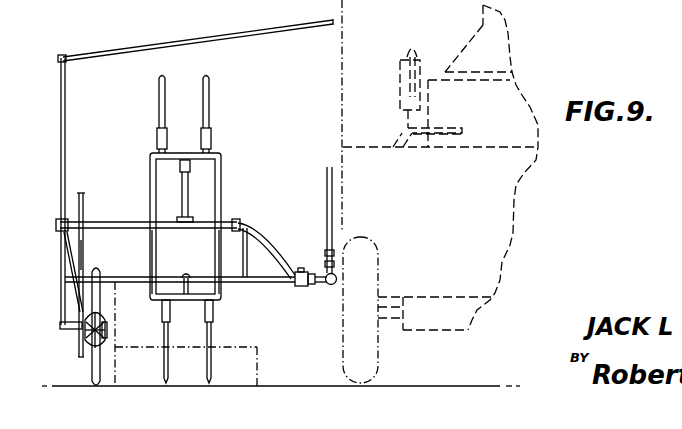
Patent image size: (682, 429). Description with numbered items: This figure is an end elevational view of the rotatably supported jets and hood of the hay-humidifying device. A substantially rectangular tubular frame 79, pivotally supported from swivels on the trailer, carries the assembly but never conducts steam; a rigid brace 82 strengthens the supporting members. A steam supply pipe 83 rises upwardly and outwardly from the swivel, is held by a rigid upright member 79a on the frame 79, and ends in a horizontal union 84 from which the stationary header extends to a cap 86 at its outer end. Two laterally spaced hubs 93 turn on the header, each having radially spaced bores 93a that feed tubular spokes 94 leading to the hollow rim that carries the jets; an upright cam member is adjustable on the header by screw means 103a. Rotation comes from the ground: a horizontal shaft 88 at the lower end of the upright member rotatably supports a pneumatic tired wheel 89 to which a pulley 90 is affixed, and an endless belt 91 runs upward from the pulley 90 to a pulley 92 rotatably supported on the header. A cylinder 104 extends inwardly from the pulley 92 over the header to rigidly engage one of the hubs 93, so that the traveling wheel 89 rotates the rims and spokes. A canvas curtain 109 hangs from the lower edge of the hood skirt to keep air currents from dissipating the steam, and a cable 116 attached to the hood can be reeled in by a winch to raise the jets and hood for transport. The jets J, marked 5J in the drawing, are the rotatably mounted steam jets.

The cable 116 is at (160, 43).
The piston rod 5J is at (209, 115).
The tubular spoke 94 is at (149, 171).
The pulley 92 is at (84, 200).
The radially spaced bores 93a is at (148, 212).
The hubs 93 is at (176, 199).
The union 84 is at (238, 222).
The steam supply pipe 83 is at (249, 258).
The rigid upright member 79a is at (262, 262).
The tubular frame 79 is at (272, 283).
The screw means 103a is at (183, 230).
The cylinder 104 is at (173, 223).
The endless belt 91 is at (84, 247).
The cap 86 is at (58, 232).
The brace 82 is at (63, 296).
The shaft 88 is at (72, 330).
The pulley 90 is at (80, 358).
The pneumatic tired wheel 89 is at (101, 378).
The canvas curtain 109 is at (260, 380).